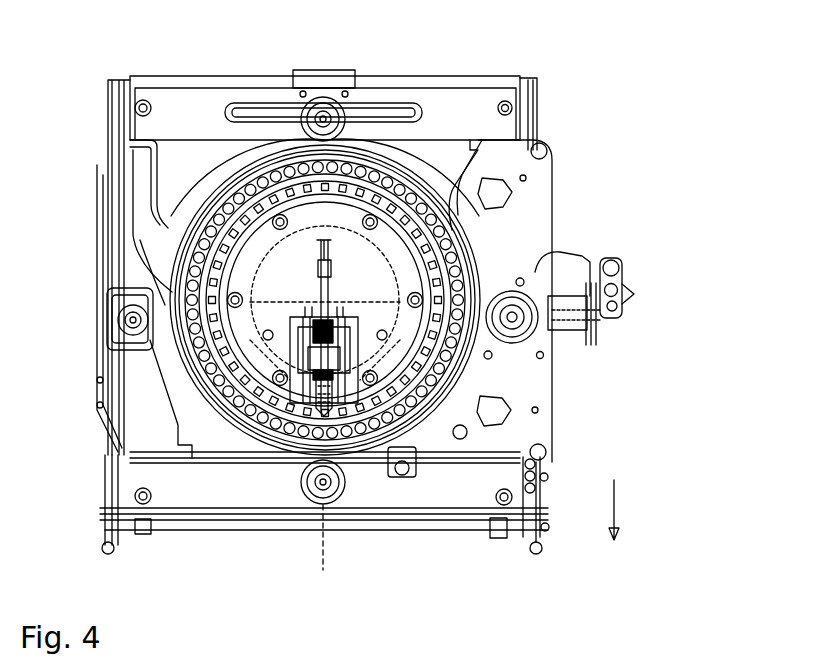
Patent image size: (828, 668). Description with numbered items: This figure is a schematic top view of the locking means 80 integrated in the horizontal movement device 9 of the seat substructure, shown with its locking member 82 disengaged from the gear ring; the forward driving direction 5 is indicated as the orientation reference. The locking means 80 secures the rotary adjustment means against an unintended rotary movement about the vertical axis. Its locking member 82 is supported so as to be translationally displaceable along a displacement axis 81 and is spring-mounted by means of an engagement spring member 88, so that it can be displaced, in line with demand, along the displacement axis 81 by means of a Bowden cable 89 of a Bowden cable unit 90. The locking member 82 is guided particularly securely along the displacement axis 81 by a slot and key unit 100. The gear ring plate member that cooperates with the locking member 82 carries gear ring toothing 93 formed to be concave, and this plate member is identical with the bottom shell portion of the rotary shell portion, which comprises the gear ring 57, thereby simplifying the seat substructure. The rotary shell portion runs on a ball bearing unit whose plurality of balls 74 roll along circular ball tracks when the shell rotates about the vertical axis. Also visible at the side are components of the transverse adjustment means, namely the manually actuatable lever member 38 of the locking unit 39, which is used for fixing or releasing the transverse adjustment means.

The horizontal movement device 9 is at (583, 95).
The gear ring toothing 93 is at (343, 210).
The balls 74 is at (232, 197).
The gear ring 57 is at (222, 243).
The Bowden cable 89 is at (328, 254).
The Bowden cable unit 90 is at (320, 288).
The engagement spring member 88 is at (310, 325).
The locking unit 39 is at (588, 250).
The manually actuatable lever member 38 is at (620, 283).
The locking member 82 is at (310, 392).
The displacement axis 81 is at (323, 567).
The locking means 80 is at (224, 552).
The slot and key unit 100 is at (355, 433).
The forward driving direction 5 is at (614, 508).